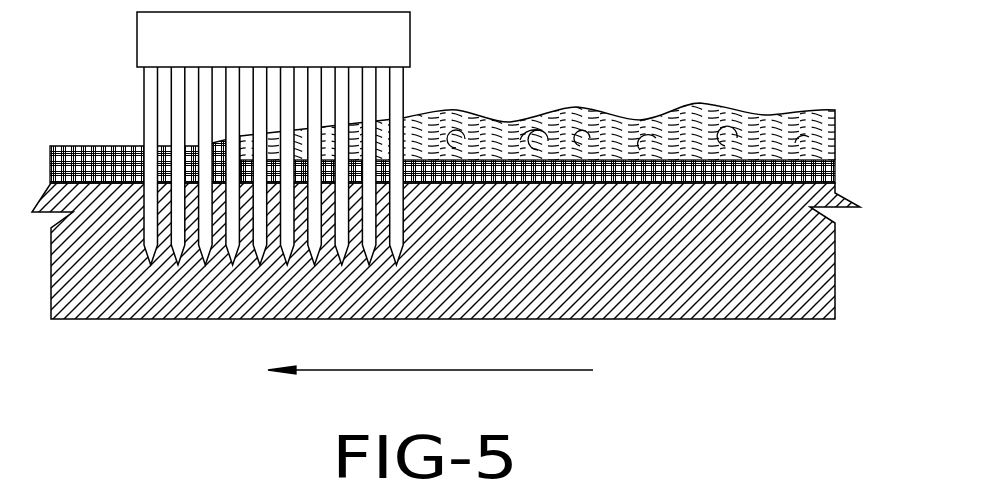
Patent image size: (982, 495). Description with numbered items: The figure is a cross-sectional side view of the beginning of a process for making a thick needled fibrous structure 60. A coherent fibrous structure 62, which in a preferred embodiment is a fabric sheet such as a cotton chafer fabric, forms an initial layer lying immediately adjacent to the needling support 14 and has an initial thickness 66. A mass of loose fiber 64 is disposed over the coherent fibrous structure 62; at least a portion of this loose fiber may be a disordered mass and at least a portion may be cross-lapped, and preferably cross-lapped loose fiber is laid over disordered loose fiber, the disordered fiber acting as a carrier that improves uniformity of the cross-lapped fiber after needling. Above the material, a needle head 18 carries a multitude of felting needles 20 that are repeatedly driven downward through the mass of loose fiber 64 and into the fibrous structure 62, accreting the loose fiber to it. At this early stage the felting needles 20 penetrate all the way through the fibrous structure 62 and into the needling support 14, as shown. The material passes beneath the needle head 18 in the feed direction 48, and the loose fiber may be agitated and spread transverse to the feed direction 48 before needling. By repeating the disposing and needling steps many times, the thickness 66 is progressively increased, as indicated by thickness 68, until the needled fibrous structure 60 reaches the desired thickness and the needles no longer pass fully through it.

The needling support 14 is at (660, 290).
The needle head 18 is at (252, 44).
The felting needles 20 is at (400, 90).
The feed direction 48 is at (445, 370).
The thick needled fibrous structure 60 is at (72, 141).
The coherent fibrous structure 62 is at (833, 167).
The mass of loose fiber 64 is at (592, 130).
The thickness 66 is at (773, 242).
The thickness 68 is at (117, 242).